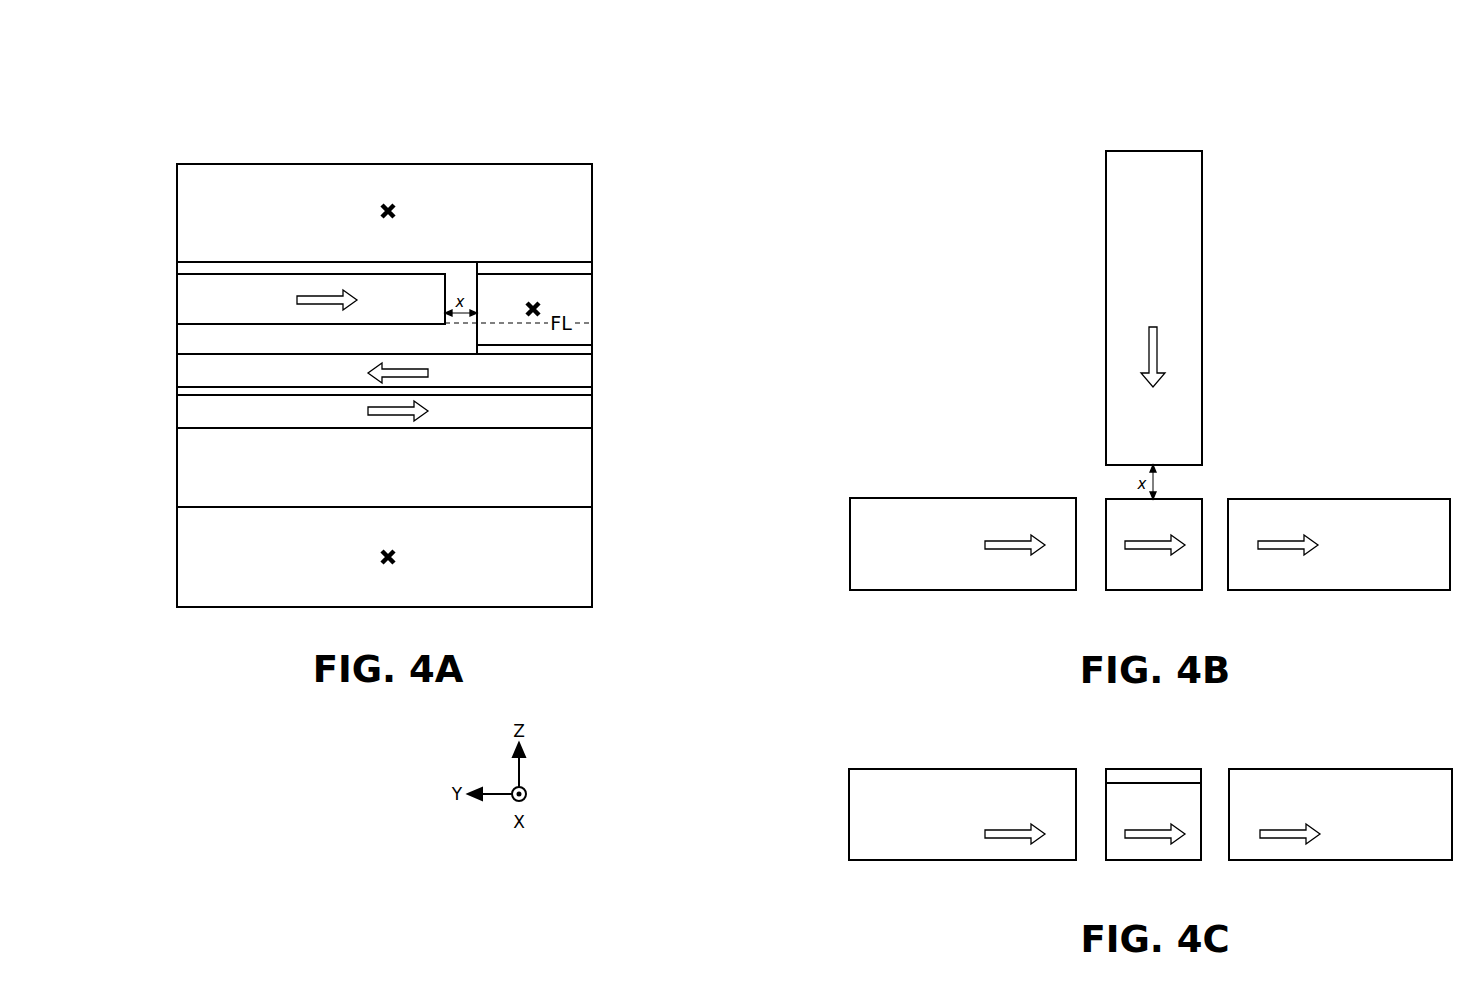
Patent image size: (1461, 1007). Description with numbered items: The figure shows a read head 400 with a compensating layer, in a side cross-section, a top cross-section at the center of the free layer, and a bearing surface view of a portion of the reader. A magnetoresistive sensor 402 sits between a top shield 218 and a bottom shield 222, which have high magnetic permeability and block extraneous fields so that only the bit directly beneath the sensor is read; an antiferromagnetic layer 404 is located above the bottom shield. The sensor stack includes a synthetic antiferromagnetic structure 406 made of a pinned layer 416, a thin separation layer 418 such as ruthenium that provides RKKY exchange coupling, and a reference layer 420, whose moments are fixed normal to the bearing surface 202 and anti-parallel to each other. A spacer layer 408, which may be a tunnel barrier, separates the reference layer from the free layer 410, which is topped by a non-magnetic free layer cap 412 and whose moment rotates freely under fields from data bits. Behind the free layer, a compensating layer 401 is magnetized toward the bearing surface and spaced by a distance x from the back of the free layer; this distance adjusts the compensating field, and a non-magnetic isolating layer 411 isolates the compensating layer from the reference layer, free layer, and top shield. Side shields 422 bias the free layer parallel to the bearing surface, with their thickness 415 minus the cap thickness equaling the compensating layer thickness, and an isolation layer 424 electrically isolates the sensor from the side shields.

In FIG. 4A, the read head 400 is at (600, 100).
In FIG. 4B, the read head 400 is at (1358, 100).
In FIG. 4A, the top shield 218 is at (547, 190).
In FIG. 4A, the bottom shield 222 is at (547, 533).
In FIG. 4A, the bearing surface 202 is at (592, 563).
In FIG. 4B, the bearing surface 202 is at (1140, 592).
In FIG. 4A, the compensating layer 401 is at (187, 302).
In FIG. 4B, the compensating layer 401 is at (1159, 455).
In FIG. 4A, the magnetoresistive sensor 402 is at (694, 303).
In FIG. 4A, the antiferromagnetic layer 404 is at (547, 453).
In FIG. 4A, the synthetic antiferromagnetic structure 406 is at (620, 428).
In FIG. 4A, the spacer layer 408 is at (585, 351).
In FIG. 4A, the free layer 410 is at (547, 300).
In FIG. 4B, the free layer 410 is at (1160, 522).
In FIG. 4C, the free layer 410 is at (1160, 816).
In FIG. 4A, the non-magnetic isolating layer 411 is at (187, 267).
In FIG. 4A, the free layer cap 412 is at (585, 266).
In FIG. 4C, the free layer cap 412 is at (1170, 777).
In FIG. 4A, the side shield thickness 415 is at (620, 262).
In FIG. 4C, the side shield thickness 415 is at (838, 769).
In FIG. 4A, the pinned layer 416 is at (583, 421).
In FIG. 4A, the thin separation layer 418 is at (187, 393).
In FIG. 4A, the reference layer 420 is at (187, 365).
In FIG. 4B, the side shields 422 is at (1035, 522).
In FIG. 4C, the side shields 422 is at (1035, 792).
In FIG. 4B, the isolation layer 424 is at (1090, 517).